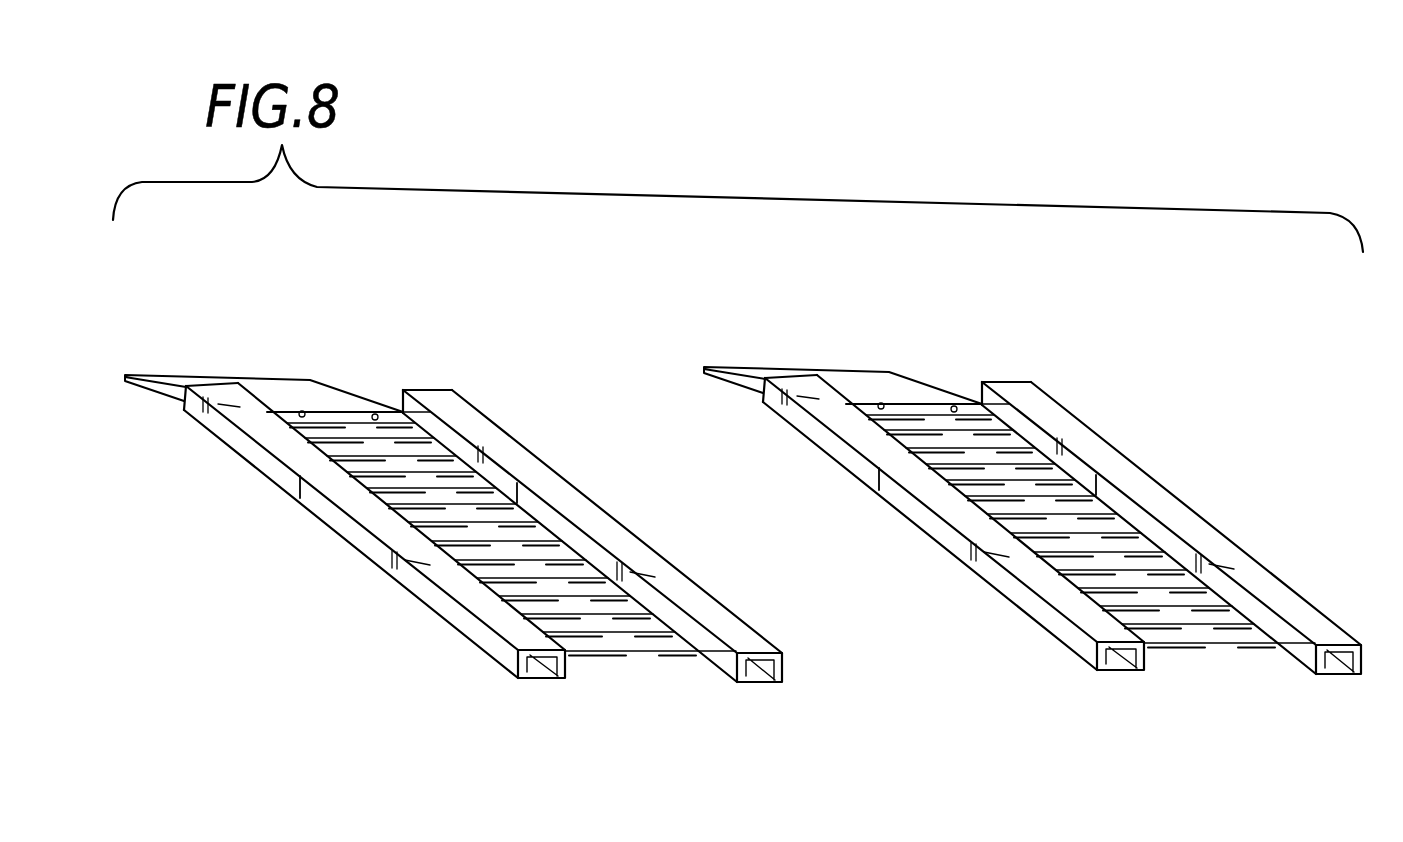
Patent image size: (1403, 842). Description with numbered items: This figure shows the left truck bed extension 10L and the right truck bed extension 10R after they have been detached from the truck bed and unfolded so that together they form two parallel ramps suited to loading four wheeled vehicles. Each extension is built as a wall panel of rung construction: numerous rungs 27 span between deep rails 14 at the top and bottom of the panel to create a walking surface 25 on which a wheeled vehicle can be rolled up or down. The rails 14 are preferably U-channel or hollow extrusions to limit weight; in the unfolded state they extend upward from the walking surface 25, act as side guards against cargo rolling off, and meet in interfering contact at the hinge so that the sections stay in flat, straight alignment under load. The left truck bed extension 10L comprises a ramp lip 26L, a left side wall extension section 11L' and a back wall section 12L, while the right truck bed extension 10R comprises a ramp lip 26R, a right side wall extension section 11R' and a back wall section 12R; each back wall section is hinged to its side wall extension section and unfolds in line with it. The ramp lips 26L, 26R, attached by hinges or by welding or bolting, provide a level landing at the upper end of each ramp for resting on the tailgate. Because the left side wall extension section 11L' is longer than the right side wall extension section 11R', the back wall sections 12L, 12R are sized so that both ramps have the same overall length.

The left truck bed extension 10L is at (430, 533).
The right truck bed extension 10R is at (1009, 525).
The left side wall extension section 11L' is at (391, 458).
The right side wall extension section 11R' is at (970, 450).
The back wall section 12L is at (561, 580).
The back wall section 12R is at (1140, 572).
The rails 14 is at (533, 448).
The walking surface 25 is at (630, 582).
The ramp lip 26L is at (325, 383).
The ramp lip 26R is at (856, 346).
The rungs 27 is at (585, 520).